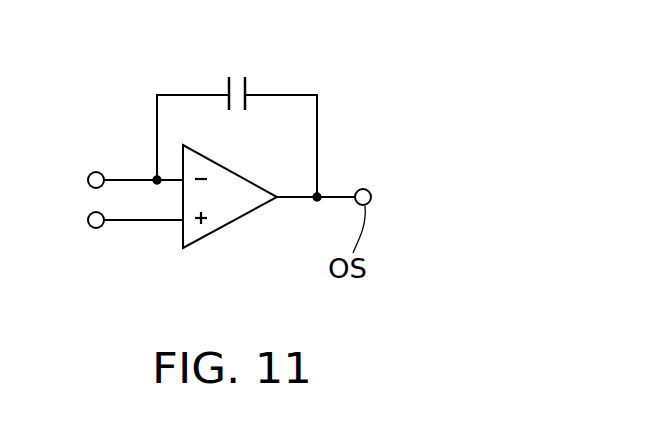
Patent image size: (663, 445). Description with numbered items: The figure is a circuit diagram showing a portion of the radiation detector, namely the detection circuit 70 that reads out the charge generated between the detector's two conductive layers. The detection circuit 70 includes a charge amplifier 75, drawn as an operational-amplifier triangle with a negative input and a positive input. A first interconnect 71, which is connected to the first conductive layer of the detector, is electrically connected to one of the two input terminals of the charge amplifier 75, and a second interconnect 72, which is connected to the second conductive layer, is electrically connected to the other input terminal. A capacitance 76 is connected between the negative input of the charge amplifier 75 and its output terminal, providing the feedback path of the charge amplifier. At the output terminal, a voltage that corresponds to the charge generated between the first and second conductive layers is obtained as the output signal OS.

The detection circuit 70 is at (490, 97).
The first interconnect 71 is at (112, 177).
The second interconnect 72 is at (122, 223).
The charge amplifier 75 is at (343, 130).
The capacitance 76 is at (252, 83).